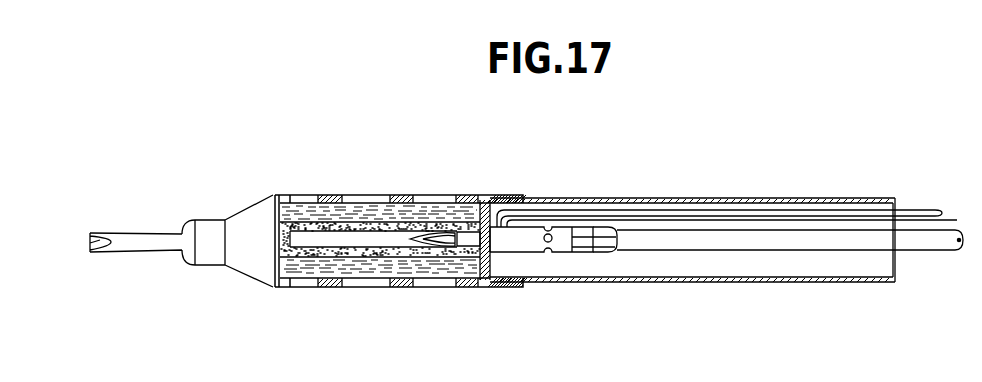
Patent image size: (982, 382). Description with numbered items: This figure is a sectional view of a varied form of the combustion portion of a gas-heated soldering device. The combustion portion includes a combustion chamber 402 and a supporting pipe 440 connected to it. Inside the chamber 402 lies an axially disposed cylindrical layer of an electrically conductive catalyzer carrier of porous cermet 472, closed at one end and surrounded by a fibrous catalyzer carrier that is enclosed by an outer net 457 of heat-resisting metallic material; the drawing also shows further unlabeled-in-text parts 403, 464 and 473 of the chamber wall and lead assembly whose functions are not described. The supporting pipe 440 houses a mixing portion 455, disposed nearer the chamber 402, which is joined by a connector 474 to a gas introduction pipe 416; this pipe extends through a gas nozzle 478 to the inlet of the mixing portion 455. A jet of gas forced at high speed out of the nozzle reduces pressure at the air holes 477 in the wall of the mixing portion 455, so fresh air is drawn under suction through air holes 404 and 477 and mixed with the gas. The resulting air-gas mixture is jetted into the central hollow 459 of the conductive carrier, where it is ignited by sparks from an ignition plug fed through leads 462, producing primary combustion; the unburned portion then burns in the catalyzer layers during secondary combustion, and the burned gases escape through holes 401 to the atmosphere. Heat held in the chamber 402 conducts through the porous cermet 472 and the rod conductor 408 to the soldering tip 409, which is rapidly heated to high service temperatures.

The holes 401 is at (308, 202).
The combustion chamber 402 is at (465, 202).
The heater element end 403 is at (472, 240).
The air holes 404 is at (585, 198).
The rod conductor 408 is at (152, 249).
The soldering tip 409 is at (105, 242).
The gas introduction pipe 416 is at (945, 252).
The supporting pipe 440 is at (717, 198).
The mixing portion 455 is at (517, 255).
The outer net 457 is at (377, 203).
The central hollow 459 is at (373, 240).
The leads 462 is at (955, 217).
The lead tube 464 is at (917, 213).
The porous cermet 472 is at (346, 221).
The spacer rings 473 is at (420, 205).
The connector 474 is at (613, 252).
The air holes 477 is at (547, 243).
The gas nozzle 478 is at (582, 252).